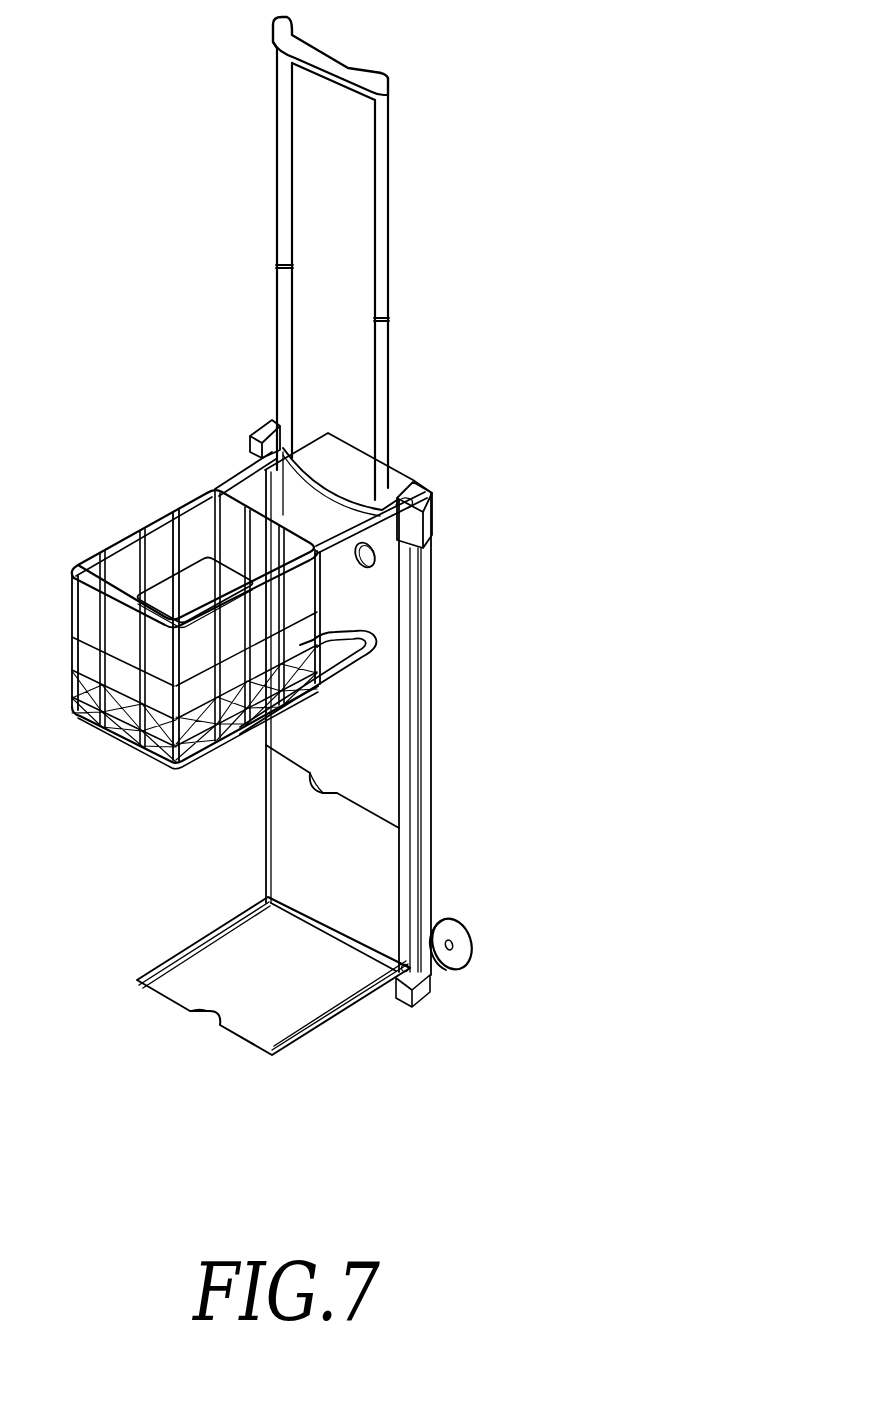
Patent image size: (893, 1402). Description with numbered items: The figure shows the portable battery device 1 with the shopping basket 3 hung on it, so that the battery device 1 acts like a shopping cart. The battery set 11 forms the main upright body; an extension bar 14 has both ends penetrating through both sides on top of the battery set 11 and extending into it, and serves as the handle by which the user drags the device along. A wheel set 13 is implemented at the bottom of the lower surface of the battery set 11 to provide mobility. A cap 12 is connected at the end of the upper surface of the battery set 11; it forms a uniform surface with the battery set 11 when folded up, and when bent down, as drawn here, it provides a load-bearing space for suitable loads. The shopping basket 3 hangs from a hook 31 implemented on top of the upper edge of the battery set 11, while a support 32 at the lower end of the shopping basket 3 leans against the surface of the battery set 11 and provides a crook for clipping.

The battery device 1 is at (183, 231).
The shopping basket 3 is at (112, 545).
The battery set 11 is at (383, 757).
The cap 12 is at (180, 968).
The wheel set 13 is at (470, 947).
The extension bar 14 is at (388, 264).
The hook 31 is at (416, 483).
The support 32 is at (378, 640).